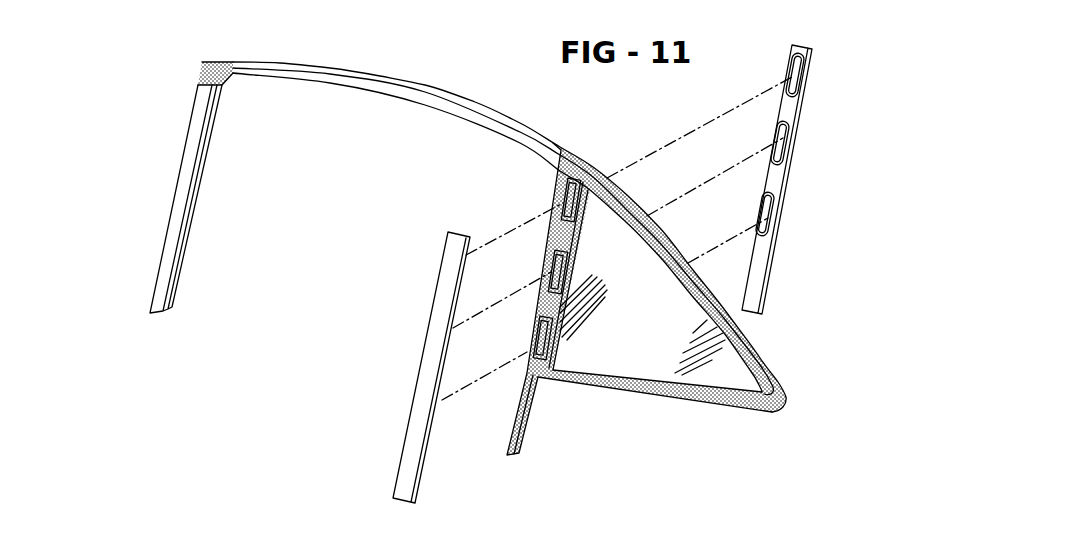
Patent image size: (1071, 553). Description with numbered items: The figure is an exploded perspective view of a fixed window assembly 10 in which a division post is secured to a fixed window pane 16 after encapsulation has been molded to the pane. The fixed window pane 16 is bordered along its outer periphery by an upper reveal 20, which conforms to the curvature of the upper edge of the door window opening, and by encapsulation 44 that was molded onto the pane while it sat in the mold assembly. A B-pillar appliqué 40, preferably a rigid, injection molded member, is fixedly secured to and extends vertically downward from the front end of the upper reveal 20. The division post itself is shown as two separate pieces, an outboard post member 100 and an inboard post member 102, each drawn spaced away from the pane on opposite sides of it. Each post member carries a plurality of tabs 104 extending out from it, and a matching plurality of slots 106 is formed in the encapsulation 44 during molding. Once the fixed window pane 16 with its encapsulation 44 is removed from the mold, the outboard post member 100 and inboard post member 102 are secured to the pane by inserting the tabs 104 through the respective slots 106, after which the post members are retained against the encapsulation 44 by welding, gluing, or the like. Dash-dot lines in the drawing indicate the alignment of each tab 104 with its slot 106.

The vehicle door assembly 10 is at (725, 432).
The fixed window pane 16 is at (660, 337).
The upper reveal 20 is at (440, 88).
The B-pillar appliqué 40 is at (163, 200).
The encapsulation 44 is at (643, 394).
The outboard post member 100 is at (417, 368).
The inboard post member 102 is at (770, 257).
The tabs 104 is at (797, 83).
The slots 106 is at (562, 203).